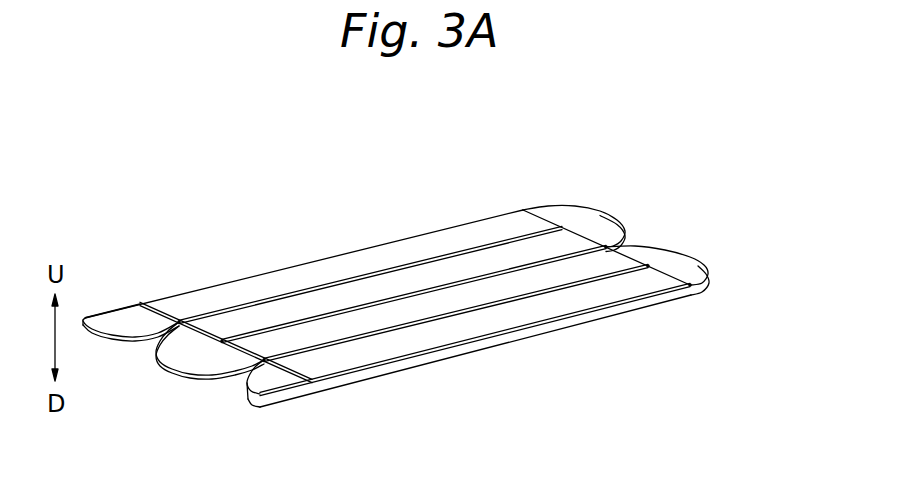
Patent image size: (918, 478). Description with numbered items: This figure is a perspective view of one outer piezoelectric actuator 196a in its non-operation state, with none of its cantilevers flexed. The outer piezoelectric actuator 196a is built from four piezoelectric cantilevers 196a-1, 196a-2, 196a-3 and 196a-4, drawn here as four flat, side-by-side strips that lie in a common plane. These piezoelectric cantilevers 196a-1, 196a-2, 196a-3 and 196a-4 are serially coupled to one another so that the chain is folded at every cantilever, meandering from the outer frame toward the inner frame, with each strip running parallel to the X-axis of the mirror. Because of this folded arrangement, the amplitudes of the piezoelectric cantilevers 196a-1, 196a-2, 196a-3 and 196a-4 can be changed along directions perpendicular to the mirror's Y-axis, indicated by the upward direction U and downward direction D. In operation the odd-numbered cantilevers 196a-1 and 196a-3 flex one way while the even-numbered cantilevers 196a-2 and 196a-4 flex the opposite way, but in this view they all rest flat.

The outer piezoelectric actuator 196a is at (778, 348).
The piezoelectric cantilever 196a-1 is at (437, 243).
The piezoelectric cantilever 196a-2 is at (502, 255).
The piezoelectric cantilever 196a-3 is at (465, 297).
The piezoelectric cantilever 196a-4 is at (408, 342).